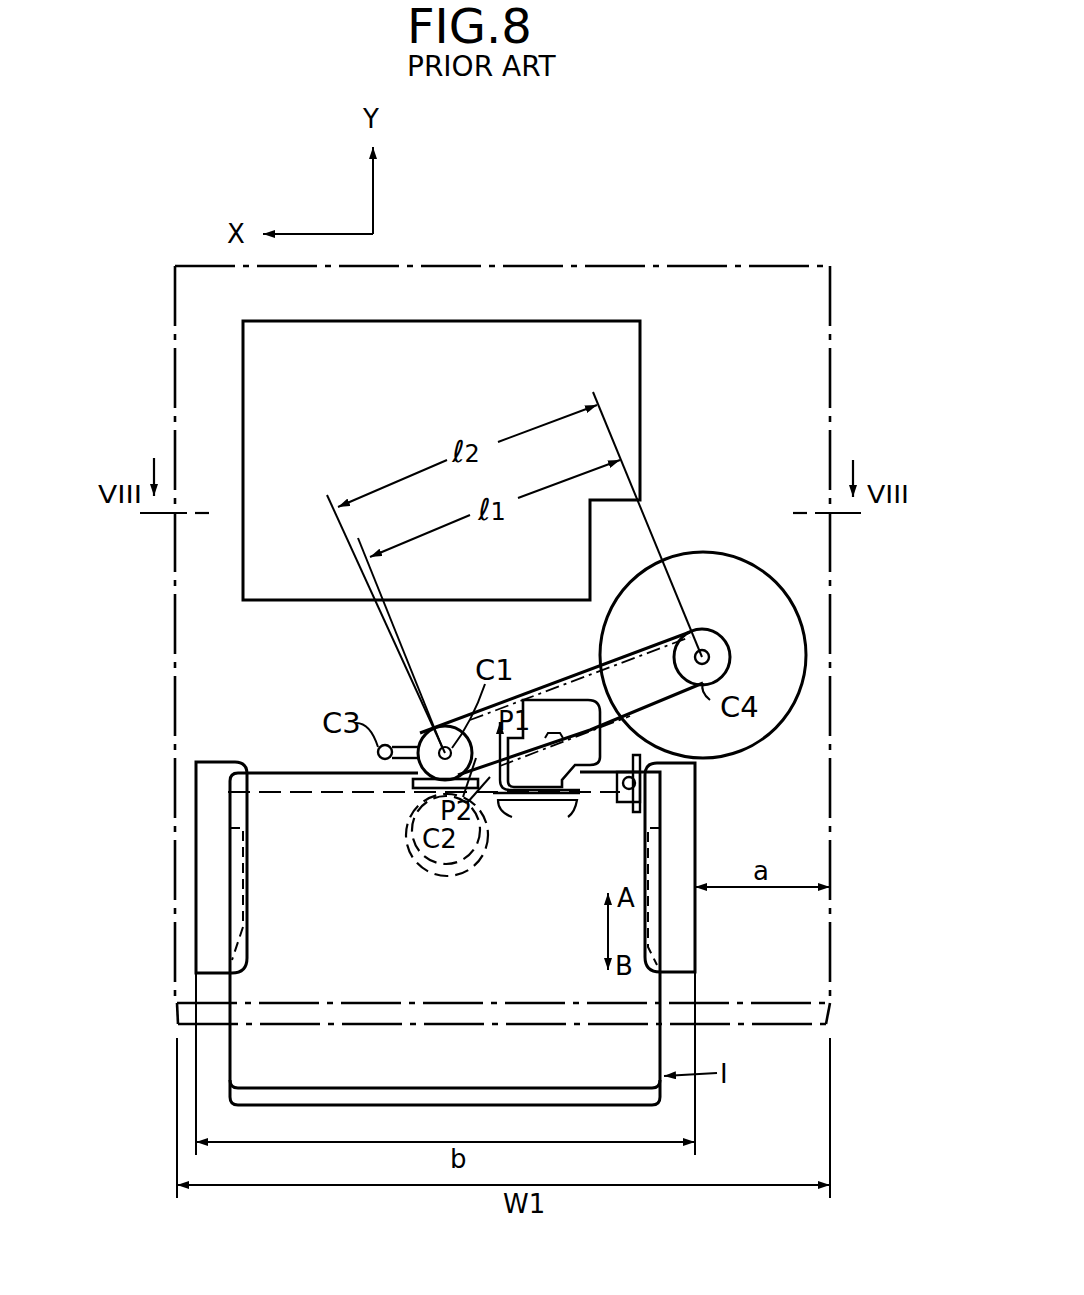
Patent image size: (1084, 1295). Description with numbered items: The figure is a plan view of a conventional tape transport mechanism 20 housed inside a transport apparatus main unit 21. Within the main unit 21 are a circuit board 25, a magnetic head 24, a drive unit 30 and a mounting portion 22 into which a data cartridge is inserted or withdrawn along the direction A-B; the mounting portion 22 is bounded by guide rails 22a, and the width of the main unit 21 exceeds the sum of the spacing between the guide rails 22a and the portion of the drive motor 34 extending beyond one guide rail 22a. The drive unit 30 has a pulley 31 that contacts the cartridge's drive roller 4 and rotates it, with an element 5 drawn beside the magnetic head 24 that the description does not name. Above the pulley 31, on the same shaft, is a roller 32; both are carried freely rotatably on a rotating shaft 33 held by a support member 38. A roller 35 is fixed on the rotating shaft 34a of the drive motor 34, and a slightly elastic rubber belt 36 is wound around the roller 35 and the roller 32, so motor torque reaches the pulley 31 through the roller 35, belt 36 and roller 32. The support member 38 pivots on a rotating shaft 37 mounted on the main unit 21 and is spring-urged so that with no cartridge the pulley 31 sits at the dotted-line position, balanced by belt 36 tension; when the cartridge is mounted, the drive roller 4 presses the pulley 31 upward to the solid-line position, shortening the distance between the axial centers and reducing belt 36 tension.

The tape transport mechanism 20 is at (688, 245).
The transport apparatus main unit 21 is at (830, 422).
The mounting portion 22 is at (243, 988).
The guide rail 22a is at (205, 900).
The magnetic head 24 is at (527, 773).
The circuit board 25 is at (628, 371).
The drive unit 30 is at (640, 568).
The pulley 31 is at (423, 763).
The roller 32 is at (384, 799).
The rotating shaft 33 is at (450, 730).
The drive motor 34 is at (806, 662).
The rotating shaft 34a is at (722, 631).
The roller 35 is at (703, 650).
The belt 36 is at (668, 703).
The rotating shaft 37 is at (378, 752).
The support member 38 is at (402, 742).
The drive roller 4 is at (460, 870).
The guide plate 5 is at (568, 803).